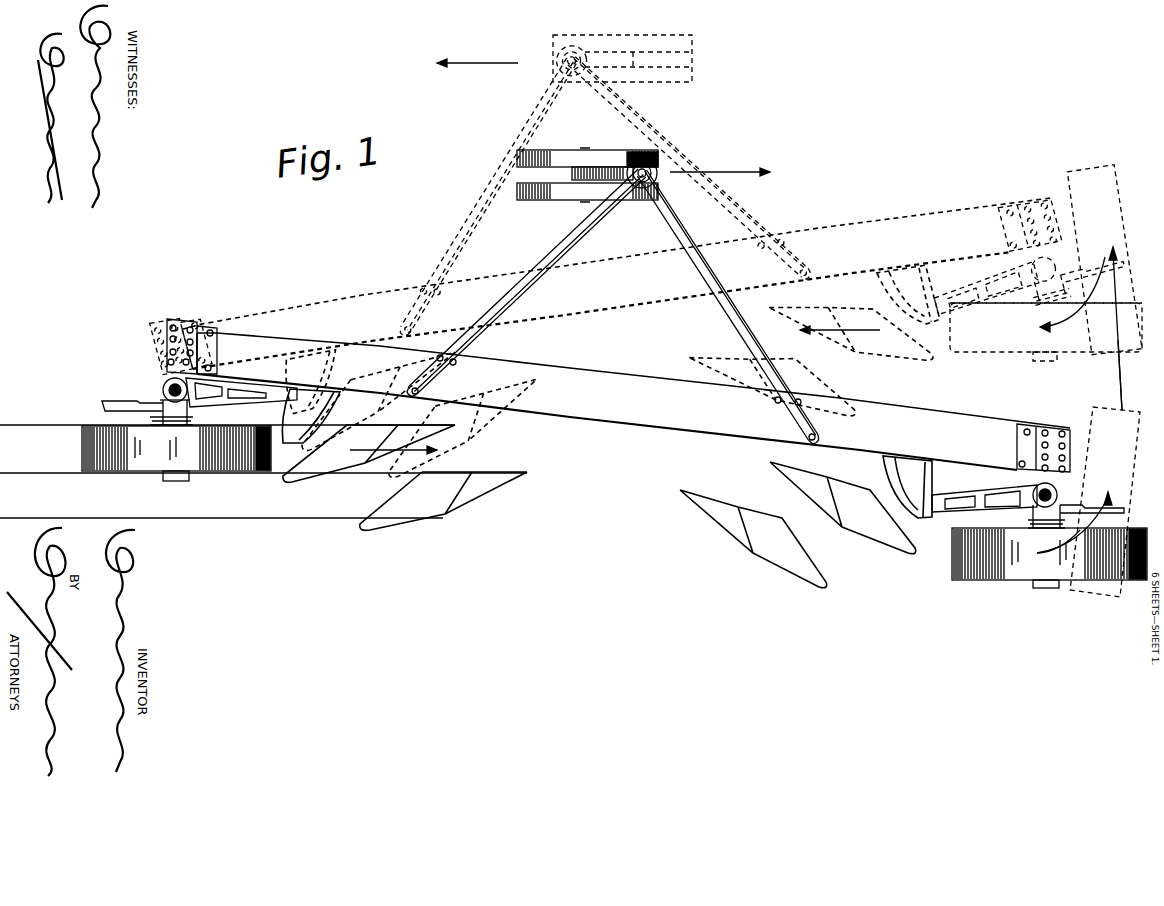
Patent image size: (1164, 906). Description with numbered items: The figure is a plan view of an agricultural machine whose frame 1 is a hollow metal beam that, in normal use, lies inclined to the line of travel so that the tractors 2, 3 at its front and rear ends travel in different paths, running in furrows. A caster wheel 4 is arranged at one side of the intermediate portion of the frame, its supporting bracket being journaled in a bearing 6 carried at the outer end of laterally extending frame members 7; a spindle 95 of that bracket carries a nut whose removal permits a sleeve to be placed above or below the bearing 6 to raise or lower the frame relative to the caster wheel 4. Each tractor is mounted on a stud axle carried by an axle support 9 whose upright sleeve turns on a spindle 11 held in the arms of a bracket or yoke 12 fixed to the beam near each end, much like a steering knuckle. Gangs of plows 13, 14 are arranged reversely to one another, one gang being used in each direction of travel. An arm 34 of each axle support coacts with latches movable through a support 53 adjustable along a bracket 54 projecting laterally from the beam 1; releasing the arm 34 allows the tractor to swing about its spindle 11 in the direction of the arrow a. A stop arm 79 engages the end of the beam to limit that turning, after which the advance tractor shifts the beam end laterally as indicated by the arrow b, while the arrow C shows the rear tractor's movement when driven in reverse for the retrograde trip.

The frame 1 is at (628, 418).
The tractor 2 is at (976, 583).
The tractor 3 is at (116, 476).
The caster wheel 4 is at (548, 188).
The bearing 6 is at (652, 164).
The frame members 7 is at (664, 220).
The axle support 9 is at (166, 404).
The spindle 11 is at (170, 386).
The bracket or yoke 12 is at (207, 324).
The gang of plows 13 is at (372, 510).
The gang of plows 14 is at (880, 530).
The arm 34 is at (611, 445).
The support 53 is at (934, 469).
The bracket 54 is at (330, 405).
The stop arm 79 is at (112, 403).
The spindle 95 is at (637, 152).
The arrow c C is at (1032, 333).
The arrow b is at (1123, 385).
The arrow a is at (1125, 512).